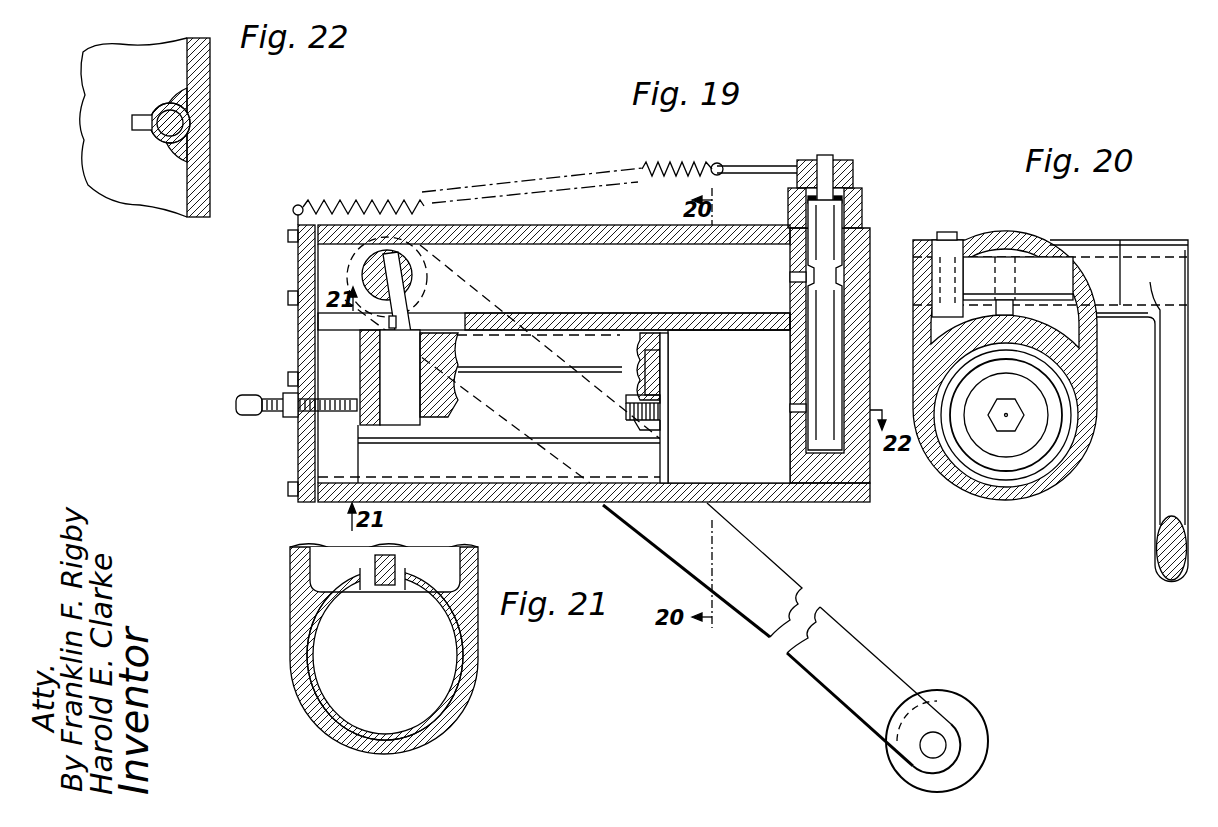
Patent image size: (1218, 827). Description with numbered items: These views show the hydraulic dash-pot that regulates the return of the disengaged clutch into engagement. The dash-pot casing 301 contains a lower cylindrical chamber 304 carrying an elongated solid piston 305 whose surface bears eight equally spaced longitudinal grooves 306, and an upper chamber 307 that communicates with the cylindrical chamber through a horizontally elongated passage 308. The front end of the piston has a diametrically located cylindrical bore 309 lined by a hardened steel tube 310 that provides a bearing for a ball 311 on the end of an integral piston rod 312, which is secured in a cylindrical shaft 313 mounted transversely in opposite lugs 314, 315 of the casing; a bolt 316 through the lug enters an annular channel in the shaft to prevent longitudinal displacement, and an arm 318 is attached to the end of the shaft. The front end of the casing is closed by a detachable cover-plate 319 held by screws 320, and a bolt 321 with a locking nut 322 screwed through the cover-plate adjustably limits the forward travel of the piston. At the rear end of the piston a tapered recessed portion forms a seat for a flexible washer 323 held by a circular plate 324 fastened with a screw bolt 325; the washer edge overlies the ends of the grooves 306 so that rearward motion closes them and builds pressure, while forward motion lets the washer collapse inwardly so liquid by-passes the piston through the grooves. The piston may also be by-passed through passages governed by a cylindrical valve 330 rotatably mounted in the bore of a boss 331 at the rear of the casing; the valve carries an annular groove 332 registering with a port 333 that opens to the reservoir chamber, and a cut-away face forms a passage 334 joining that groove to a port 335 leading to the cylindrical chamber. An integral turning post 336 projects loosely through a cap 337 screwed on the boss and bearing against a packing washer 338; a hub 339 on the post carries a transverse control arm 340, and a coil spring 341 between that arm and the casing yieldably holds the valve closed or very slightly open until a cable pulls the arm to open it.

In FIG. 19, the dash-pot casing 301 is at (790, 503).
In FIG. 20, the dash-pot casing 301 is at (967, 486).
In FIG. 19, the lower cylindrical chamber 304 is at (712, 475).
In FIG. 19, the elongated solid piston 305 is at (478, 470).
In FIG. 21, the elongated solid piston 305 is at (442, 677).
In FIG. 19, the longitudinal grooves 306 is at (512, 445).
In FIG. 21, the longitudinal grooves 306 is at (395, 748).
In FIG. 19, the upper chamber 307 is at (622, 254).
In FIG. 21, the upper chamber 307 is at (318, 560).
In FIG. 19, the horizontally elongated passage 308 is at (328, 322).
In FIG. 21, the horizontally elongated passage 308 is at (368, 582).
In FIG. 19, the cylindrical bore 309 is at (400, 407).
In FIG. 19, the hardened steel tube 310 is at (388, 418).
In FIG. 19, the ball 311 is at (393, 358).
In FIG. 19, the piston rod 312 is at (383, 322).
In FIG. 20, the piston rod 312 is at (1004, 307).
In FIG. 21, the piston rod 312 is at (385, 556).
In FIG. 19, the cylindrical shaft 313 is at (365, 272).
In FIG. 20, the cylindrical shaft 313 is at (988, 257).
In FIG. 19, the lug 314 is at (846, 272).
In FIG. 20, the lug 315 is at (1096, 241).
In FIG. 20, the bolt 316 is at (946, 232).
In FIG. 19, the arm 318 is at (770, 571).
In FIG. 20, the arm 318 is at (1158, 489).
In FIG. 19, the detachable cover-plate 319 is at (298, 455).
In FIG. 19, the screws 320 is at (288, 299).
In FIG. 19, the bolt 321 is at (238, 401).
In FIG. 19, the locking nut 322 is at (290, 417).
In FIG. 19, the flexible washer 323 is at (656, 340).
In FIG. 19, the circular plate 324 is at (650, 385).
In FIG. 19, the screw bolt 325 is at (652, 410).
In FIG. 22, the cylindrical valve 330 is at (153, 143).
In FIG. 19, the cylindrical valve 330 is at (820, 344).
In FIG. 22, the boss 331 is at (178, 150).
In FIG. 19, the boss 331 is at (830, 477).
In FIG. 19, the annular groove 332 is at (846, 262).
In FIG. 19, the port 333 is at (795, 278).
In FIG. 22, the passage 334 is at (203, 112).
In FIG. 19, the passage 334 is at (912, 381).
In FIG. 19, the port 335 is at (790, 407).
In FIG. 19, the turning post 336 is at (832, 157).
In FIG. 19, the cap 337 is at (858, 189).
In FIG. 19, the packing washer 338 is at (858, 198).
In FIG. 19, the hub 339 is at (855, 163).
In FIG. 19, the control arm 340 is at (784, 165).
In FIG. 19, the coil spring 341 is at (650, 168).